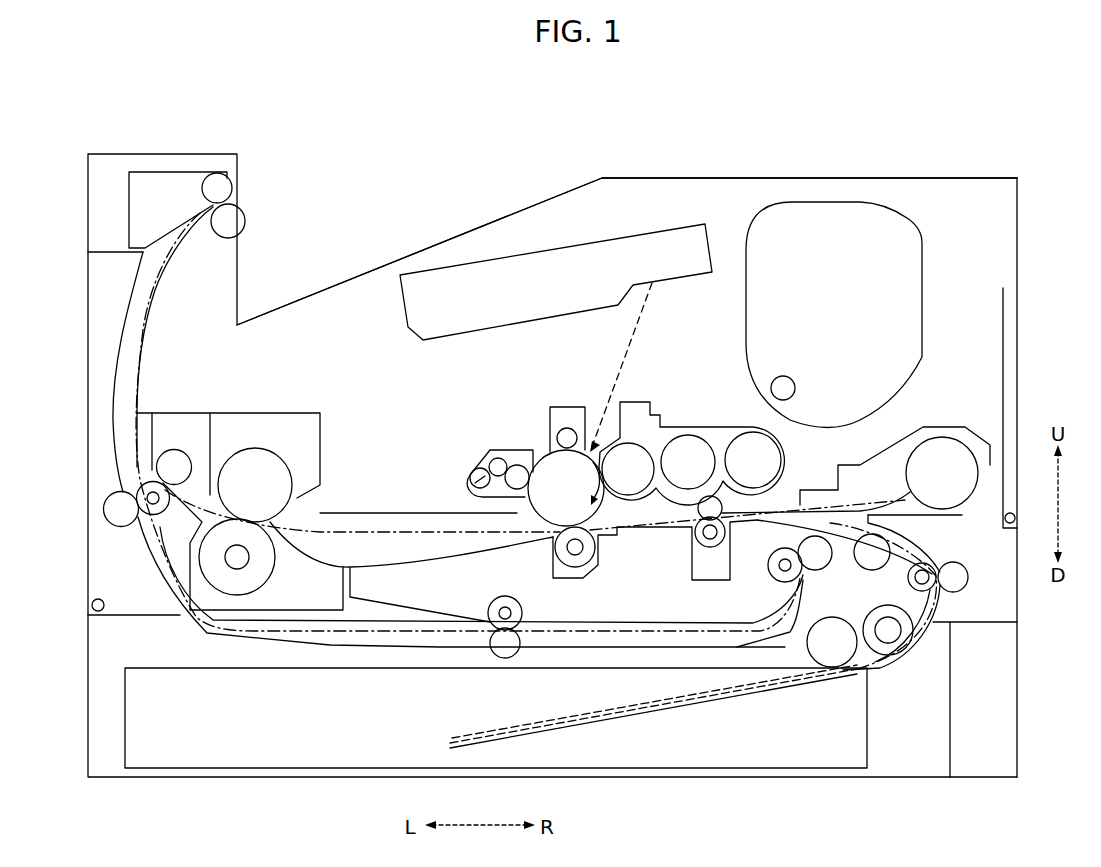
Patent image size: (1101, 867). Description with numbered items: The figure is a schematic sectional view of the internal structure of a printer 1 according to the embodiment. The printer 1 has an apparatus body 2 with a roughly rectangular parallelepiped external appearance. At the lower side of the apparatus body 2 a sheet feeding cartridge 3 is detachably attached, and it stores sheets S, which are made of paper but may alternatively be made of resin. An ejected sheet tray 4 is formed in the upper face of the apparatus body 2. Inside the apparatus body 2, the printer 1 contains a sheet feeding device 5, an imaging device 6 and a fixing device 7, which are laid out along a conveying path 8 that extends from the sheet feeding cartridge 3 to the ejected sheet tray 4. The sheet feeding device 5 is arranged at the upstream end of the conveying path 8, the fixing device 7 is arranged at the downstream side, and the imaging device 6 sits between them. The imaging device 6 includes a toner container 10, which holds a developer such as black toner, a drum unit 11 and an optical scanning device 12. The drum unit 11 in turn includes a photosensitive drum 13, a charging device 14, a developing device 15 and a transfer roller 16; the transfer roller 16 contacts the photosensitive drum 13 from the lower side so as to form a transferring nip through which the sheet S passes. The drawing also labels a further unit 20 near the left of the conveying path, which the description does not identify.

The printer 1 is at (553, 138).
The apparatus body 2 is at (1018, 241).
The sheet feeding cartridge 3 is at (1018, 700).
The ejected sheet tray 4 is at (497, 220).
The sheet feeding device 5 is at (918, 606).
The imaging device 6 is at (729, 195).
The fixing device 7 is at (255, 440).
The conveying path 8 is at (410, 512).
The toner container 10 is at (790, 203).
The drum unit 11 is at (658, 378).
The optical scanning device 12 is at (700, 264).
The photosensitive drum 13 is at (558, 442).
The charging device 14 is at (571, 407).
The developing device 15 is at (704, 427).
The transfer roller 16 is at (592, 547).
The conveying unit 20 is at (300, 413).
The sheet S is at (520, 730).